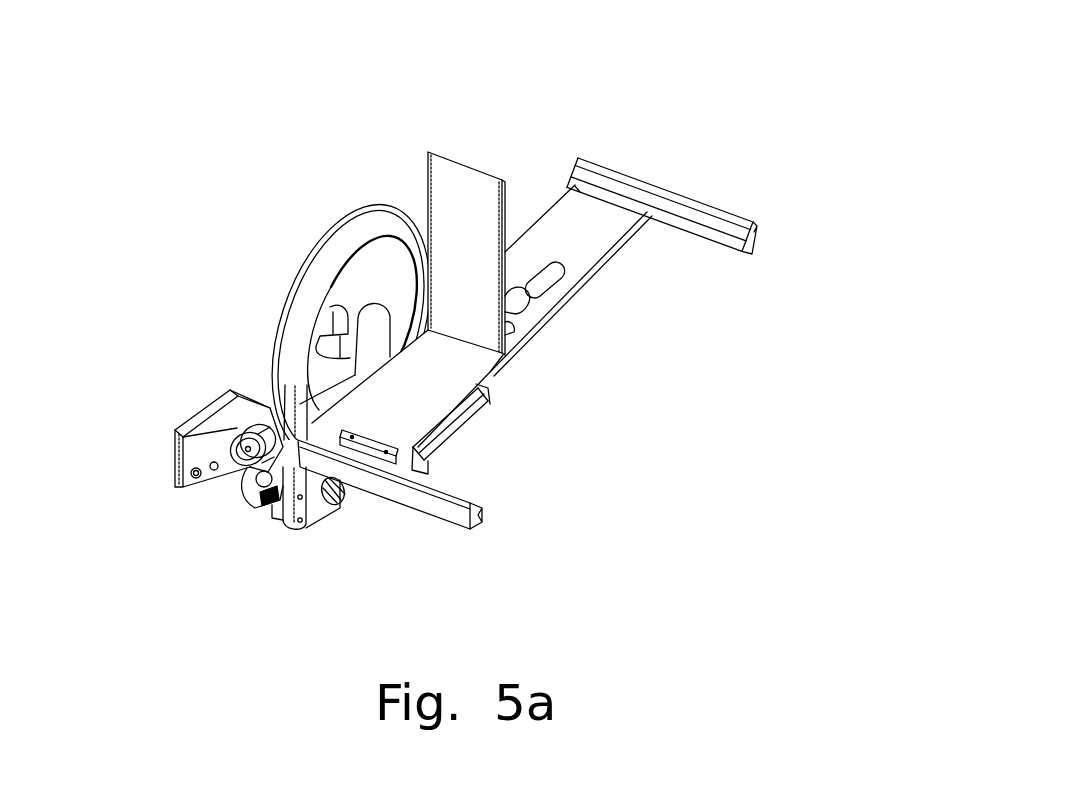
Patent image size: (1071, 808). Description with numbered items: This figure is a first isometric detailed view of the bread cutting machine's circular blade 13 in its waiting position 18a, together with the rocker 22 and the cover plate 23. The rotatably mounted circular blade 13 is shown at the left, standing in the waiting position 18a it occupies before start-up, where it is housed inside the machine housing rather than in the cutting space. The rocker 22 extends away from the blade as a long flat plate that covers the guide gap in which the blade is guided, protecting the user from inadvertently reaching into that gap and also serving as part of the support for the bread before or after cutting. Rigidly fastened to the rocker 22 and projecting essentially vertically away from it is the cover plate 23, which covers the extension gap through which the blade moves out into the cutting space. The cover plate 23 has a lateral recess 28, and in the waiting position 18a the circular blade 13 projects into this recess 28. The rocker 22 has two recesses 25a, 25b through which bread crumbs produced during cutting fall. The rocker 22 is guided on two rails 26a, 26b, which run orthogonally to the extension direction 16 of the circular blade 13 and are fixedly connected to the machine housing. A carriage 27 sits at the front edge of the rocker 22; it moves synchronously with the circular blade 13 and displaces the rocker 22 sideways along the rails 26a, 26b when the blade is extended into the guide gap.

The circular blade 13 is at (340, 250).
The extension direction 16 is at (583, 378).
The waiting position 18a is at (250, 311).
The rocker 22 is at (562, 210).
The cover plate 23 is at (443, 202).
The recess 25a is at (560, 268).
The recess 25b is at (517, 299).
The rail 26a is at (733, 222).
The rail 26b is at (422, 500).
The carriage 27 is at (458, 430).
The lateral recess 28 is at (431, 256).